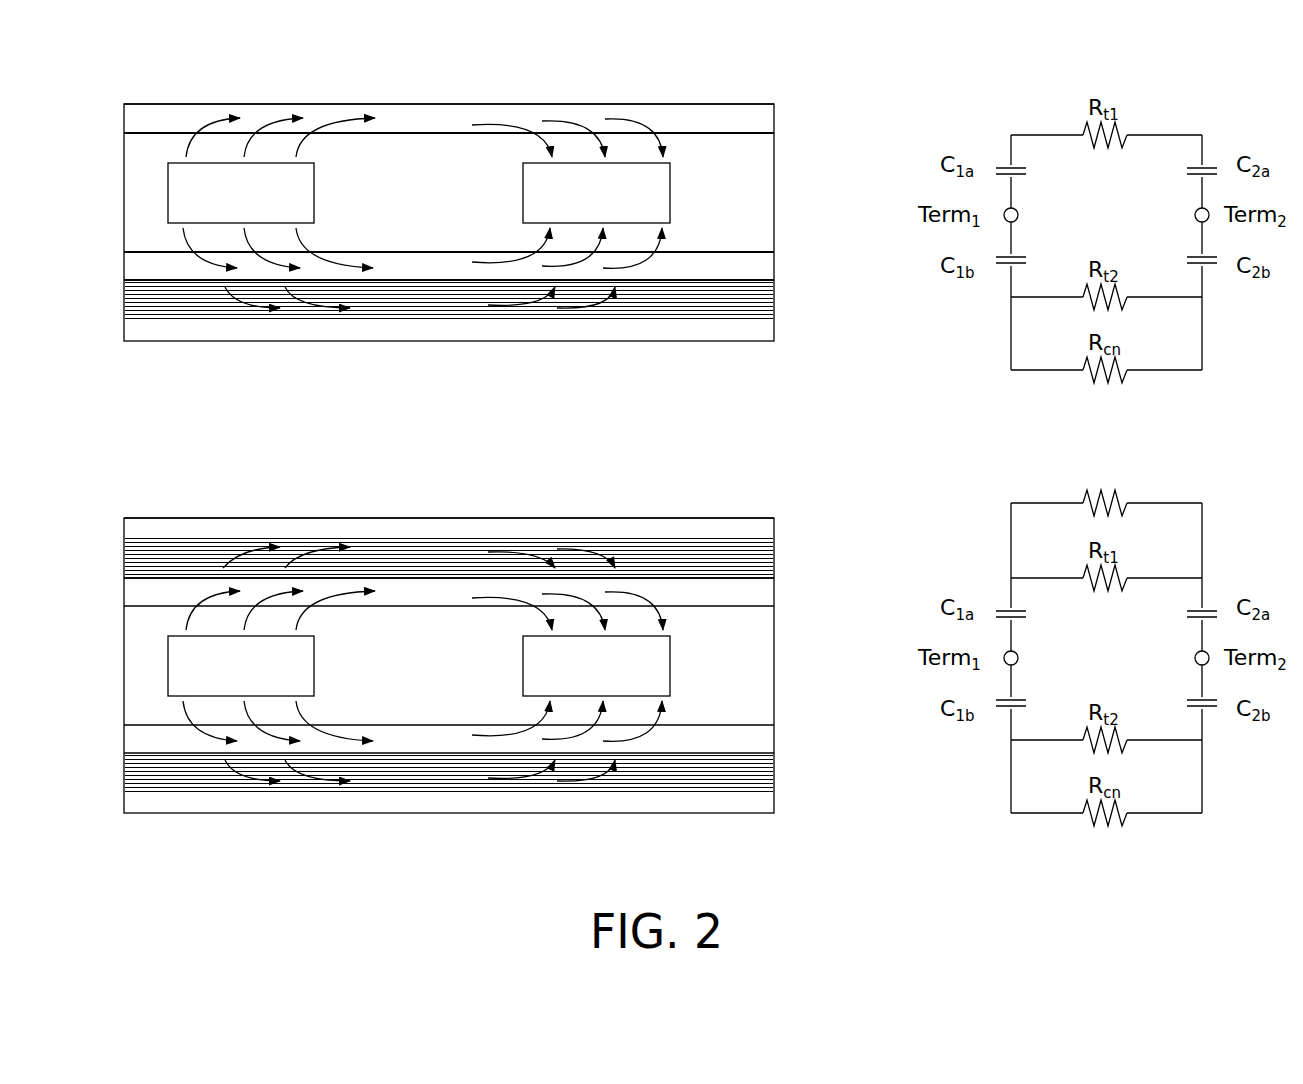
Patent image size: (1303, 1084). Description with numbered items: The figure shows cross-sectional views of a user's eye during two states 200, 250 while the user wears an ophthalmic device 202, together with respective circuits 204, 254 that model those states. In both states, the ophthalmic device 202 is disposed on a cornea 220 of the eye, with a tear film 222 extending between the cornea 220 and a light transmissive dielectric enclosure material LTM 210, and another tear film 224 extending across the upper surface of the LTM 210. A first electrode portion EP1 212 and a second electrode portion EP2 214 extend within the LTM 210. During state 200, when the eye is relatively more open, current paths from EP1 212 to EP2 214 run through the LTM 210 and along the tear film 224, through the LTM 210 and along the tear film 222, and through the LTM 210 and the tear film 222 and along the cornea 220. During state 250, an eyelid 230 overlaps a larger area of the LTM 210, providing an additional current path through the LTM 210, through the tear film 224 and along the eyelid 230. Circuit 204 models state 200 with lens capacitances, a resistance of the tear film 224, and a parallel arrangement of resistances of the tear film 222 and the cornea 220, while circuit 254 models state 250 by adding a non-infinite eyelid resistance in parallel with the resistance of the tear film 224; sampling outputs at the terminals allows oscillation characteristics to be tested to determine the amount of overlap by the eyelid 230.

The state 200 is at (80, 118).
The ophthalmic device 202 is at (118, 133).
The circuit 204 is at (908, 121).
The light transmissive dielectric enclosure material (LTM) 210 is at (762, 218).
The first electrode portion EP1 212 is at (288, 206).
The second electrode portion EP2 214 is at (643, 206).
The cornea 220 is at (483, 323).
The tear film 222 is at (780, 268).
The tear film 224 is at (780, 118).
The eyelid 230 is at (476, 553).
The state 250 is at (80, 530).
The circuit 254 is at (908, 535).